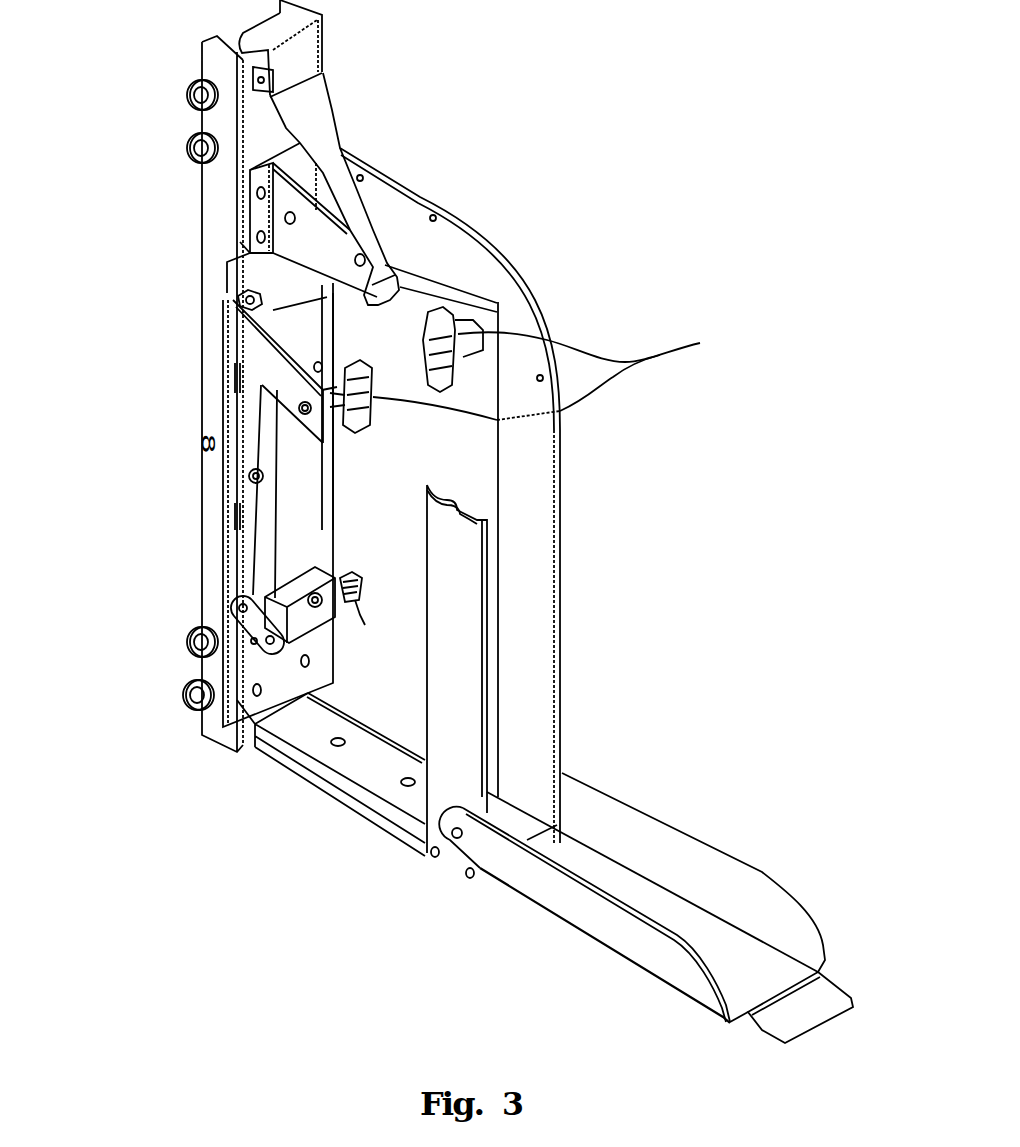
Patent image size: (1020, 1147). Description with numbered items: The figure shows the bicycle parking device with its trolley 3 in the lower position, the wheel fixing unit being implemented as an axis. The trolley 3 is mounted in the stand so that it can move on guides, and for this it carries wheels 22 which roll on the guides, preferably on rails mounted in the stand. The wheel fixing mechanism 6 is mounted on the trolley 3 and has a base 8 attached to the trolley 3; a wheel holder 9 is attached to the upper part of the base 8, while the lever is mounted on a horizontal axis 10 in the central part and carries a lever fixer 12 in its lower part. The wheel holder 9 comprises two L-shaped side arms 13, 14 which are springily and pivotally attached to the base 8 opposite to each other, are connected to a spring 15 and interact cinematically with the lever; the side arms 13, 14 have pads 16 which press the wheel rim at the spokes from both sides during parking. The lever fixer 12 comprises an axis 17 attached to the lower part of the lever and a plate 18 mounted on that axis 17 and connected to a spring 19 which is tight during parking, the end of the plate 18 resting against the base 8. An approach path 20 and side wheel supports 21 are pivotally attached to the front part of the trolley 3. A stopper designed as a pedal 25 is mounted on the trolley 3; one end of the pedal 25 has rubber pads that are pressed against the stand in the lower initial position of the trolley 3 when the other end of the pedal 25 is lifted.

The trolley 3 is at (218, 65).
The wheels 22 is at (197, 152).
The pedal 25 is at (328, 118).
The base 8 is at (258, 258).
The spring 15 is at (237, 303).
The wheel holder 9 is at (262, 350).
The side arm 13 is at (287, 380).
The horizontal axis 10 is at (250, 478).
The plate 18 is at (250, 622).
The axis 17 is at (302, 618).
The spring 19 is at (342, 590).
The lever fixer 12 is at (370, 633).
The side arm 14 is at (430, 297).
The pads 16 is at (700, 343).
The wheel fixing mechanism 6 is at (726, 479).
The side wheel supports 21 is at (533, 700).
The approach path 20 is at (690, 848).